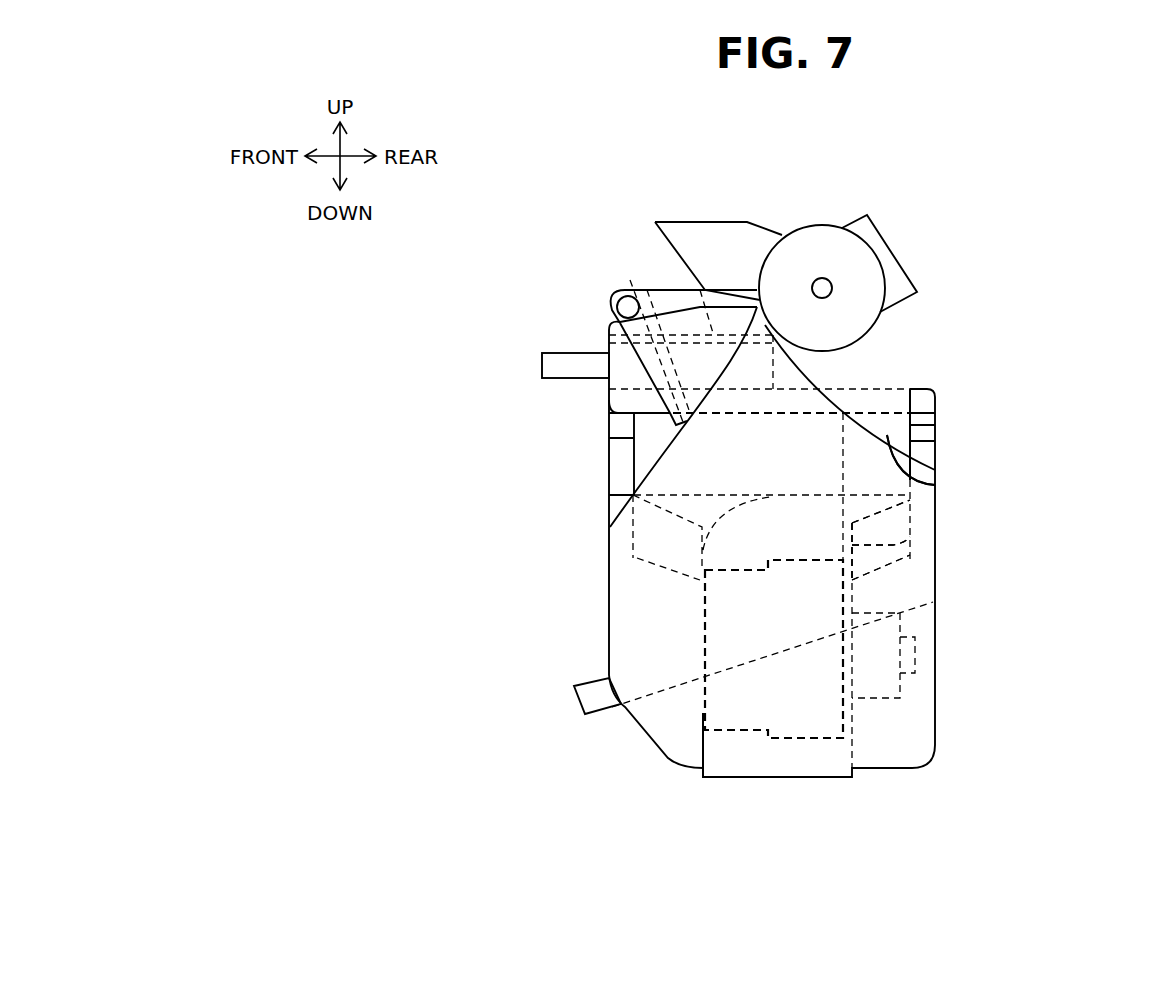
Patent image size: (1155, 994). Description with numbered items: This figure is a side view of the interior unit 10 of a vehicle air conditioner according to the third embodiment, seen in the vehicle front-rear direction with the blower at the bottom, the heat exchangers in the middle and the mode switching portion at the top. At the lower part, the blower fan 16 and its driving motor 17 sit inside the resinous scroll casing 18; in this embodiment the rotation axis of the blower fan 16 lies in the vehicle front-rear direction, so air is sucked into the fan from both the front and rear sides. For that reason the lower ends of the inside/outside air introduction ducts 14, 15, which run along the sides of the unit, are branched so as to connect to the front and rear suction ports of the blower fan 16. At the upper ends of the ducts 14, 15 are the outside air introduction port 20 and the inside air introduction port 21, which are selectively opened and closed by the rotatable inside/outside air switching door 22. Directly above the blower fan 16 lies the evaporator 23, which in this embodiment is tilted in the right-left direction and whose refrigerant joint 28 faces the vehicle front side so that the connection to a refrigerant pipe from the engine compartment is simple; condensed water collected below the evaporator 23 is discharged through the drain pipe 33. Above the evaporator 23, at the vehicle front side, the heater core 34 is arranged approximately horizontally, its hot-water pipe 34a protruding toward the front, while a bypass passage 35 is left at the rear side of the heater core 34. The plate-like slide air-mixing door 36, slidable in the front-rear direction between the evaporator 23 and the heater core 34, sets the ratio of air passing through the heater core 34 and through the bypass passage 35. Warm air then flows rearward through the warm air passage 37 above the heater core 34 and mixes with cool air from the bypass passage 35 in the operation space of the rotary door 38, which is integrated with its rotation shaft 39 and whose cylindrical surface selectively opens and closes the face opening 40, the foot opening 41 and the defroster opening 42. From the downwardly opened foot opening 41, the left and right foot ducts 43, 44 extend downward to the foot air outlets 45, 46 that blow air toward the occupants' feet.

The interior unit 10 is at (968, 678).
The inside/outside air introduction duct 14 is at (935, 484).
The inside/outside air introduction duct 15 is at (911, 460).
The blower fan 16 is at (755, 730).
The motor 17 is at (940, 631).
The scroll casing 18 is at (737, 778).
The outside air introduction port 20 is at (647, 290).
The inside air introduction port 21 is at (609, 388).
The inside/outside air switching door 22 is at (605, 337).
The evaporator 23 is at (633, 558).
The refrigerant joint 28 is at (610, 465).
The drain pipe 33 is at (588, 698).
The heater core 34 is at (630, 280).
The hot-water pipe 34a is at (553, 367).
The bypass passage 35 is at (823, 378).
The slide air-mixing door 36 is at (610, 405).
The warm air passage 37 is at (700, 290).
The rotary door 38 is at (845, 228).
The rotation shaft 39 is at (822, 278).
The face opening 40 is at (902, 265).
The foot opening 41 is at (845, 348).
The defroster opening 42 is at (727, 222).
The foot duct 43 is at (935, 425).
The foot duct 44 is at (922, 434).
The foot air outlet 45 is at (912, 537).
The foot air outlet 46 is at (881, 540).